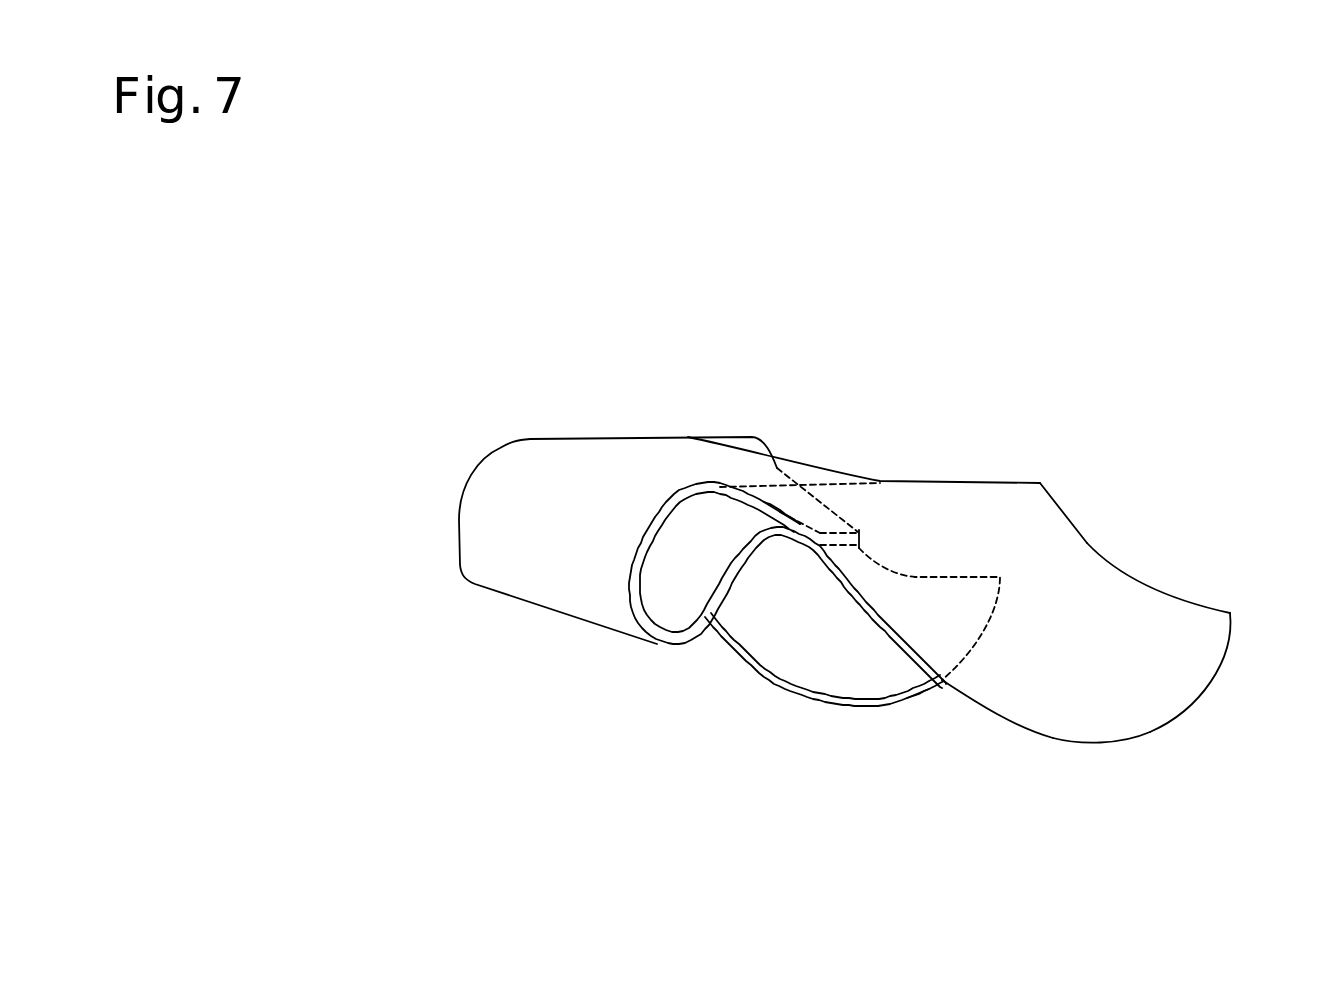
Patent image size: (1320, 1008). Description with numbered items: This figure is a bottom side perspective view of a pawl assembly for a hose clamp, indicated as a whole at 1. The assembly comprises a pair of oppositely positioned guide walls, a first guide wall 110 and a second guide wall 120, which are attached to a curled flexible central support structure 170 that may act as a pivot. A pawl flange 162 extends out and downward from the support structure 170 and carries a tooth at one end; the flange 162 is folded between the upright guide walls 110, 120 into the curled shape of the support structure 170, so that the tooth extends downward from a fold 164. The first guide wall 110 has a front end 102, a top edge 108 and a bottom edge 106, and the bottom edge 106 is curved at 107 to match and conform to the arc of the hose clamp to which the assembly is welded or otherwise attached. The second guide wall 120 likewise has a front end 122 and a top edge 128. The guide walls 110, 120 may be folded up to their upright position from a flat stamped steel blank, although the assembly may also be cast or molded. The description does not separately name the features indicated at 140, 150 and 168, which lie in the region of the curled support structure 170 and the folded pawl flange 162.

The article of footwear 1 is at (1050, 398).
The front end 102 is at (1212, 690).
The bottom edge 106 is at (1140, 585).
The curved portion 107 is at (1087, 542).
The top edge 108 is at (988, 718).
The first guide wall 110 is at (1100, 700).
The second guide wall 120 is at (832, 668).
The front end 122 is at (927, 700).
The top edge 128 is at (802, 698).
The closure assembly 140 is at (426, 618).
The guide 150 is at (767, 520).
The pawl flange 162 is at (745, 536).
The fold 164 is at (736, 641).
The cord 168 is at (738, 622).
The curled flexible central support structure 170 is at (540, 562).